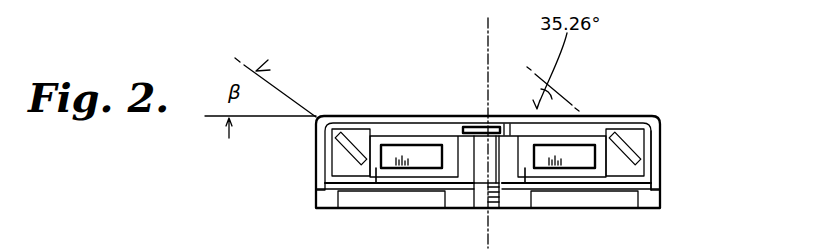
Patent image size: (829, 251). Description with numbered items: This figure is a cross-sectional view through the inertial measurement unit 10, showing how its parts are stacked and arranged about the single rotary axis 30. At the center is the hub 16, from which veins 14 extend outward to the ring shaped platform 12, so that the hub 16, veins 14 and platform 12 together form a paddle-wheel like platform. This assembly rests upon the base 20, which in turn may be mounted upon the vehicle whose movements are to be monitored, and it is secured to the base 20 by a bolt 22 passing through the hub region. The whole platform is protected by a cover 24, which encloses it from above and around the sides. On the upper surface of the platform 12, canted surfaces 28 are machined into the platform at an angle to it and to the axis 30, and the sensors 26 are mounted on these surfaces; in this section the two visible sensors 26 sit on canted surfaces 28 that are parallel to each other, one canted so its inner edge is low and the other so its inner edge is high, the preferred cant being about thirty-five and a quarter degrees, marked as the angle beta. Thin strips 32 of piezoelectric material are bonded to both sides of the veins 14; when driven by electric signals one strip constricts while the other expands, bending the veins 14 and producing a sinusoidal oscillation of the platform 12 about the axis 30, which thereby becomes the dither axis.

The inertial measurement unit 10 is at (613, 79).
The ring shaped platform 12 is at (634, 172).
The veins 14 is at (376, 168).
The hub 16 is at (464, 162).
The base 20 is at (316, 200).
The bolt 22 is at (500, 126).
The cover 24 is at (660, 166).
The sensors 26 is at (358, 132).
The canted surfaces 28 is at (338, 129).
The rotary axis 30 is at (486, 50).
The thin strips 32 is at (418, 162).